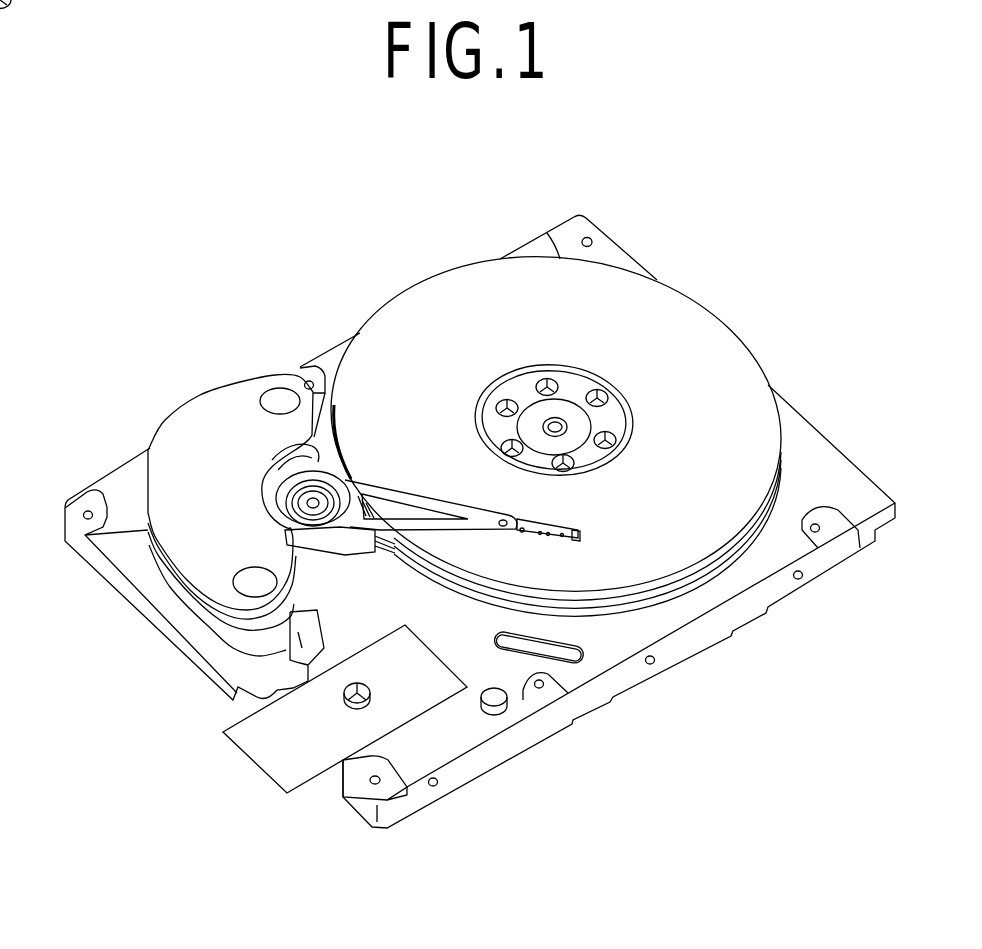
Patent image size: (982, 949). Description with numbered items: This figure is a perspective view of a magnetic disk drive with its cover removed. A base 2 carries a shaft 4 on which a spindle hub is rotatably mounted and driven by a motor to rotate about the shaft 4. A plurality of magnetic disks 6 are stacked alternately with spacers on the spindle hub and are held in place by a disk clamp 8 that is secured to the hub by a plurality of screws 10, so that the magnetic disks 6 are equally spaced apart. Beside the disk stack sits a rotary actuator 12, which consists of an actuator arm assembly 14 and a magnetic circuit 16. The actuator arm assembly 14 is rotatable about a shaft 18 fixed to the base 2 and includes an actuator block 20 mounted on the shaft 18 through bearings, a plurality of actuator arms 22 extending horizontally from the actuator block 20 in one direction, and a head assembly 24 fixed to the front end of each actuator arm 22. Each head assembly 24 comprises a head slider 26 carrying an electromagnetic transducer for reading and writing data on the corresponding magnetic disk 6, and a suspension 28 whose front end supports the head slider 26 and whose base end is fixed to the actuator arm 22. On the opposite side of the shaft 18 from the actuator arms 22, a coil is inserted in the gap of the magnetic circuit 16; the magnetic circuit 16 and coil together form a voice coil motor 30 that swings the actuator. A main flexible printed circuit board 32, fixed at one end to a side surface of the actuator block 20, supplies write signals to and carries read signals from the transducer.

The base 2 is at (810, 437).
The shaft 4 is at (566, 402).
The magnetic disks 6 is at (455, 292).
The disk clamp 8 is at (522, 384).
The screws 10 is at (504, 404).
The rotary actuator 12 is at (320, 464).
The actuator arm assembly 14 is at (363, 478).
The magnetic circuit 16 is at (188, 572).
The shaft 18 is at (306, 504).
The actuator block 20 is at (346, 520).
The actuator arms 22 is at (410, 490).
The head assembly 24 is at (537, 524).
The head slider 26 is at (576, 542).
The suspension 28 is at (523, 533).
The voice coil motor 30 is at (205, 418).
The main flexible printed circuit board 32 is at (225, 657).